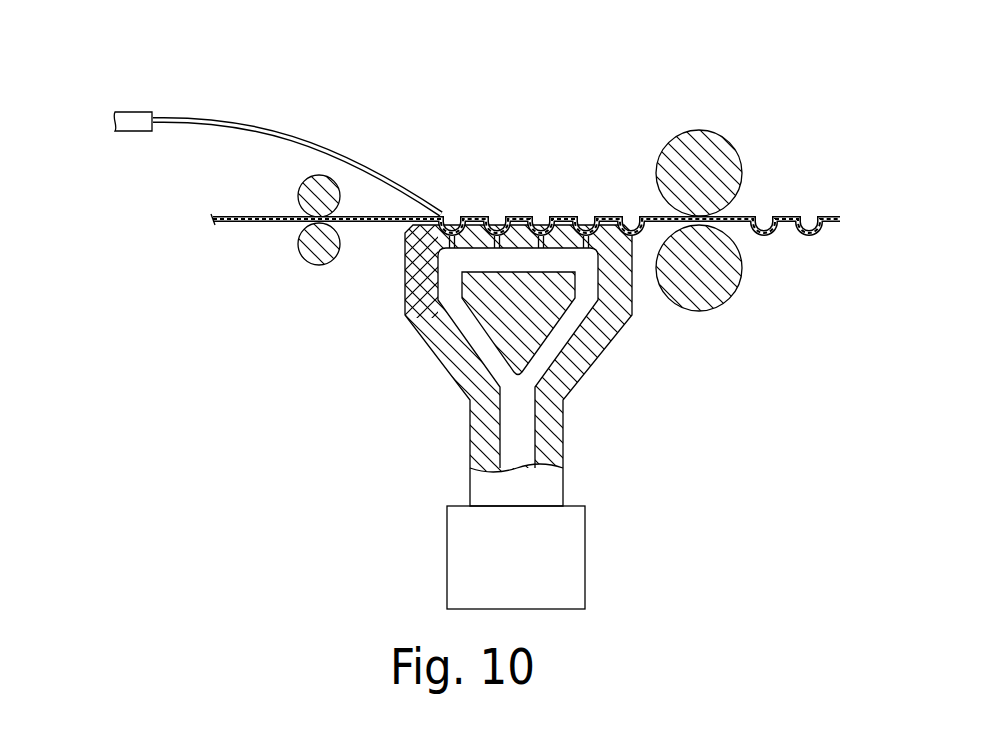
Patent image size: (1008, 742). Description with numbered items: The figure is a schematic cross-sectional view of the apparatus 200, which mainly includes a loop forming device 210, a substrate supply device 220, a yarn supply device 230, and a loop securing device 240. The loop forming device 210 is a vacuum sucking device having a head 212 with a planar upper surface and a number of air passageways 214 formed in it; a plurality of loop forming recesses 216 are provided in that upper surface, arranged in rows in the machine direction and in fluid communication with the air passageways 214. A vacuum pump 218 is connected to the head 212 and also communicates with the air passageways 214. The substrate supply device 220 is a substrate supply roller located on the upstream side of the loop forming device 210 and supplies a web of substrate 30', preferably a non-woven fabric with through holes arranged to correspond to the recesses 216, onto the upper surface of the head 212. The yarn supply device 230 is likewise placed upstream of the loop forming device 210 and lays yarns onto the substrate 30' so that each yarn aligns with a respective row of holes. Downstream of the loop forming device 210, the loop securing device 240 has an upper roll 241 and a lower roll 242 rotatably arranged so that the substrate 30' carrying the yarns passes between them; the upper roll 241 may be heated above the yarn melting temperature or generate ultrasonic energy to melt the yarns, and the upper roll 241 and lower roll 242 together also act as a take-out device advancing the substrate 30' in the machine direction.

The apparatus 200 is at (468, 309).
The loop forming device 210 is at (495, 417).
The head 212 is at (428, 330).
The air passageways 214 is at (555, 342).
The loop forming recesses 216 is at (405, 282).
The vacuum pump 218 is at (573, 535).
The substrate supply device 220 is at (319, 266).
The yarn supply device 230 is at (137, 112).
The loop securing device 240 is at (739, 166).
The upper roll 241 is at (735, 150).
The lower roll 242 is at (730, 285).
The substrate 30' is at (525, 261).